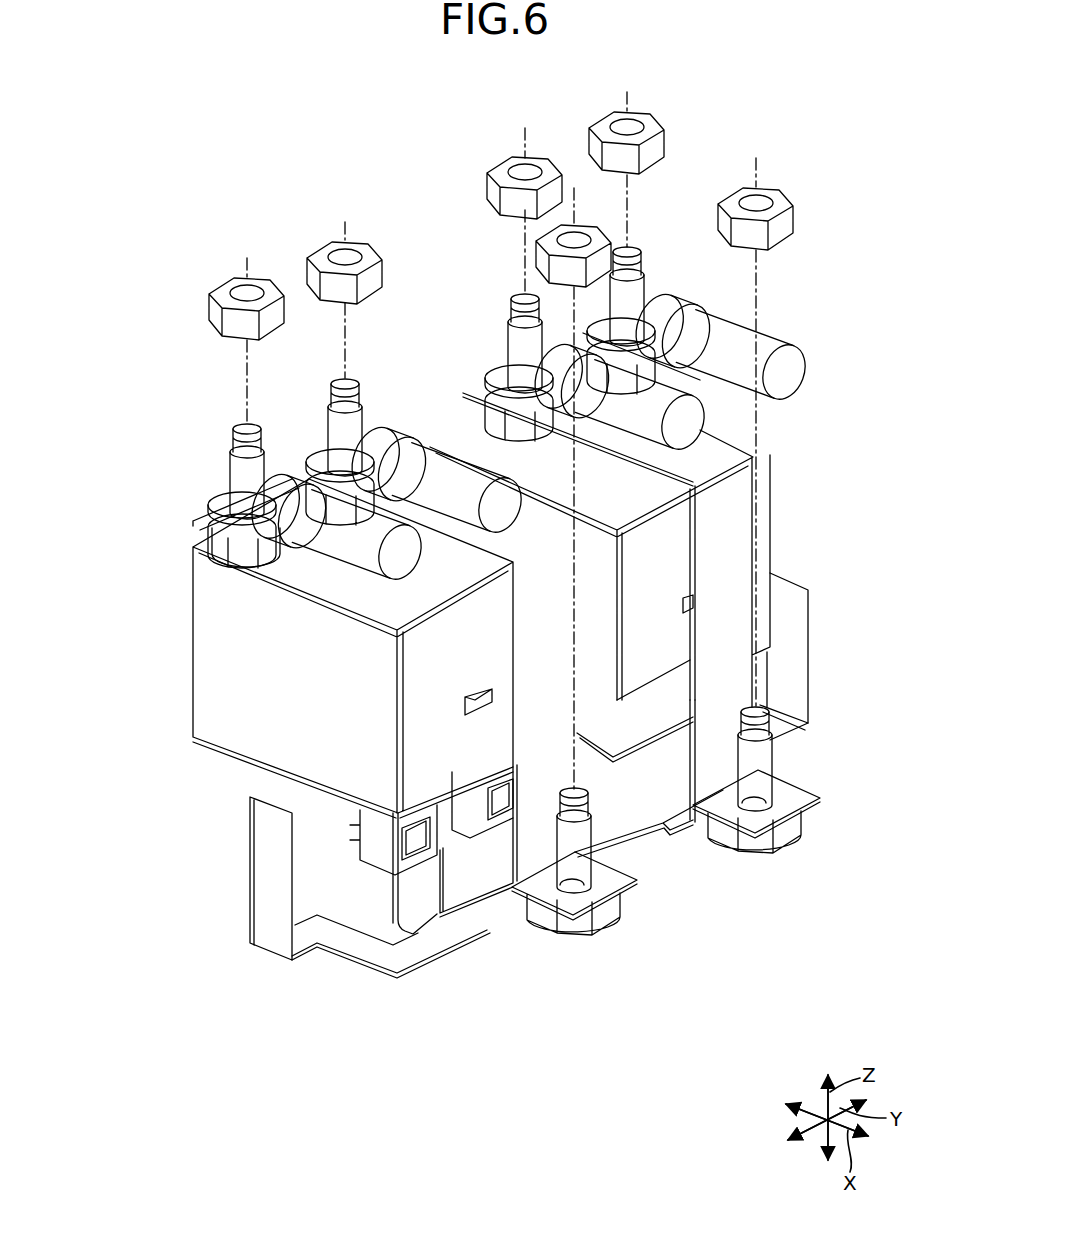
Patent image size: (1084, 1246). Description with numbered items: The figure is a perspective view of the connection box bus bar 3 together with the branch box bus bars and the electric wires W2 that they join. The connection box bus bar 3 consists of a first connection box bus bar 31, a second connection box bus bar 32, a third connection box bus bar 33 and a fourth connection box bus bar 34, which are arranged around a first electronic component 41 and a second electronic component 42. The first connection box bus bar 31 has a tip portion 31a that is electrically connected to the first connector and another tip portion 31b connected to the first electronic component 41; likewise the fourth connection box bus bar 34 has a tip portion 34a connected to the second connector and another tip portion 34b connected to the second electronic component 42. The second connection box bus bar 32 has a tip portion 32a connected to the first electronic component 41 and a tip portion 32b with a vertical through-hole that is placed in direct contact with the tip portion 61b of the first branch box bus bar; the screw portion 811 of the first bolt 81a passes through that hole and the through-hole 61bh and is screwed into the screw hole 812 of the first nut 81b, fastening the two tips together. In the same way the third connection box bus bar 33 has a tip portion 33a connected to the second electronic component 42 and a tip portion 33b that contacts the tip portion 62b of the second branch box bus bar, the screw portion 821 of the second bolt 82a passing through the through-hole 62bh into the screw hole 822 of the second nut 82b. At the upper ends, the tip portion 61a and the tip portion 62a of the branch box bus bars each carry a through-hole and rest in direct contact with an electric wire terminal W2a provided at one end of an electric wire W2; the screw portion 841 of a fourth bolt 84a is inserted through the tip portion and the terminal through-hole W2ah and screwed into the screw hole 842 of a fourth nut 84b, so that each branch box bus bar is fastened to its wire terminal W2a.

The connection box bus bar 3 is at (292, 990).
The first connection box bus bar 31 is at (133, 825).
The tip portion 31a is at (257, 838).
The tip portion 31b is at (410, 895).
The second connection box bus bar 32 is at (522, 1072).
The tip portion 32a is at (448, 902).
The tip portion 32b is at (478, 897).
The third connection box bus bar 33 is at (865, 880).
The tip portion 33a is at (682, 868).
The tip portion 33b is at (696, 832).
The fourth connection box bus bar 34 is at (885, 597).
The tip portion 34a is at (783, 612).
The tip portion 34b is at (615, 735).
The first electronic component 41 is at (220, 712).
The second electronic component 42 is at (771, 522).
The tip portion 61a is at (300, 464).
The tip portion 61b is at (602, 932).
The through-hole 61bh is at (567, 886).
The tip portion 62a is at (487, 392).
The tip portion 62b is at (773, 807).
The through-hole 62bh is at (750, 805).
The first bolt 81a is at (580, 940).
The first nut 81b is at (548, 250).
The screw portion 811 is at (582, 840).
The screw hole 812 is at (574, 240).
The second bolt 82a is at (784, 846).
The second nut 82b is at (793, 199).
The screw portion 821 is at (778, 760).
The screw hole 822 is at (760, 204).
The fourth bolt 84a is at (207, 553).
The fourth nut 84b is at (221, 284).
The screw portion 841 is at (233, 473).
The screw hole 842 is at (254, 292).
The electric wire W2 is at (692, 426).
The electric wire terminal W2a is at (217, 507).
The terminal through-hole W2ah is at (340, 463).